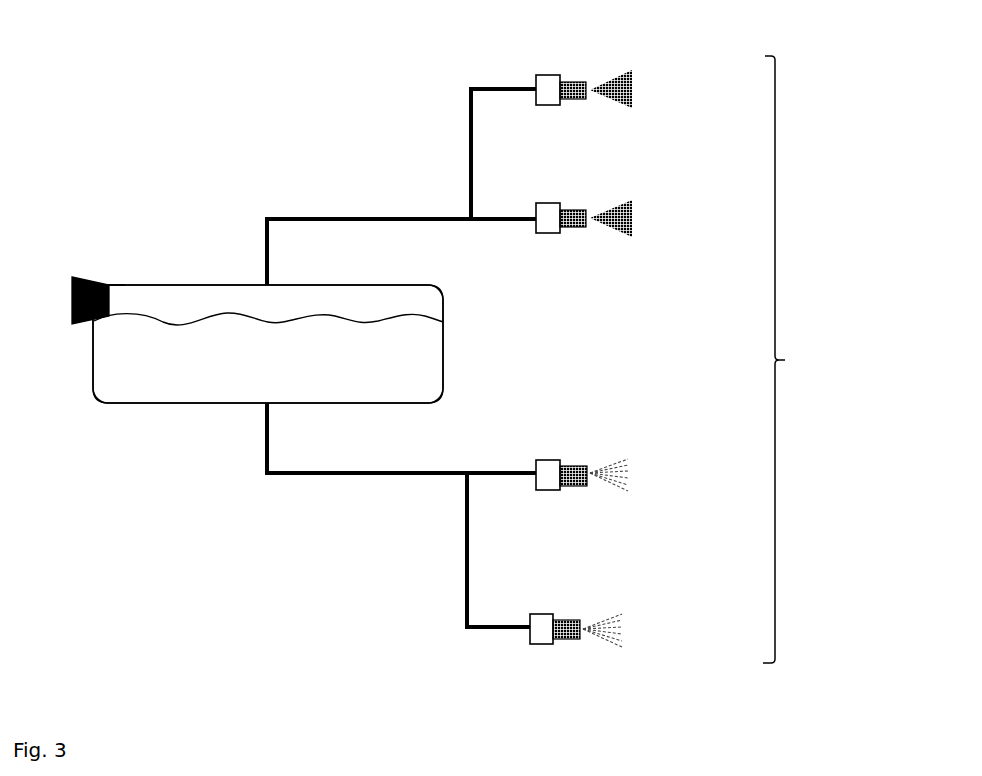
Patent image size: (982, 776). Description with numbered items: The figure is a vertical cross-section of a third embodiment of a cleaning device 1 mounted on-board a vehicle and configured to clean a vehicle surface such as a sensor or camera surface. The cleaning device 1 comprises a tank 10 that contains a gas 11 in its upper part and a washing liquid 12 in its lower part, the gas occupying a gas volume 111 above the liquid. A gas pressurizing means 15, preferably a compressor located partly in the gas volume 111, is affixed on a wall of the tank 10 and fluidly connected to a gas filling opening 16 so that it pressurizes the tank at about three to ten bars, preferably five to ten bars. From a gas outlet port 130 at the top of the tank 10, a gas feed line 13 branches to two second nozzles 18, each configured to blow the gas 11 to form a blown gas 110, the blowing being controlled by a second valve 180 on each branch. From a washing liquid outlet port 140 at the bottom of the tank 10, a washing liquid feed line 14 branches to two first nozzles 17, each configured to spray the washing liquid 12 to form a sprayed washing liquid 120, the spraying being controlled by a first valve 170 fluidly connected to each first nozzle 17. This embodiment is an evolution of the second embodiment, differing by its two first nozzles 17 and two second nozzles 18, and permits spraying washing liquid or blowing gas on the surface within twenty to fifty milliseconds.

The cleaning device 1 is at (810, 359).
The tank 10 is at (449, 303).
The gas 11 is at (184, 295).
The washing liquid 12 is at (138, 390).
The gas feed line 13 is at (389, 212).
The washing liquid feed line 14 is at (379, 482).
The gas pressurizing means 15 is at (84, 276).
The gas filling opening 16 is at (109, 282).
The first nozzle 17 is at (576, 491).
The second nozzle 18 is at (583, 104).
The blown gas 110 is at (634, 60).
The gas volume 111 is at (349, 302).
The sprayed washing liquid 120 is at (620, 452).
The gas outlet port 130 is at (260, 278).
The washing liquid outlet port 140 is at (259, 409).
The first valve 170 is at (548, 455).
The second valve 180 is at (547, 71).